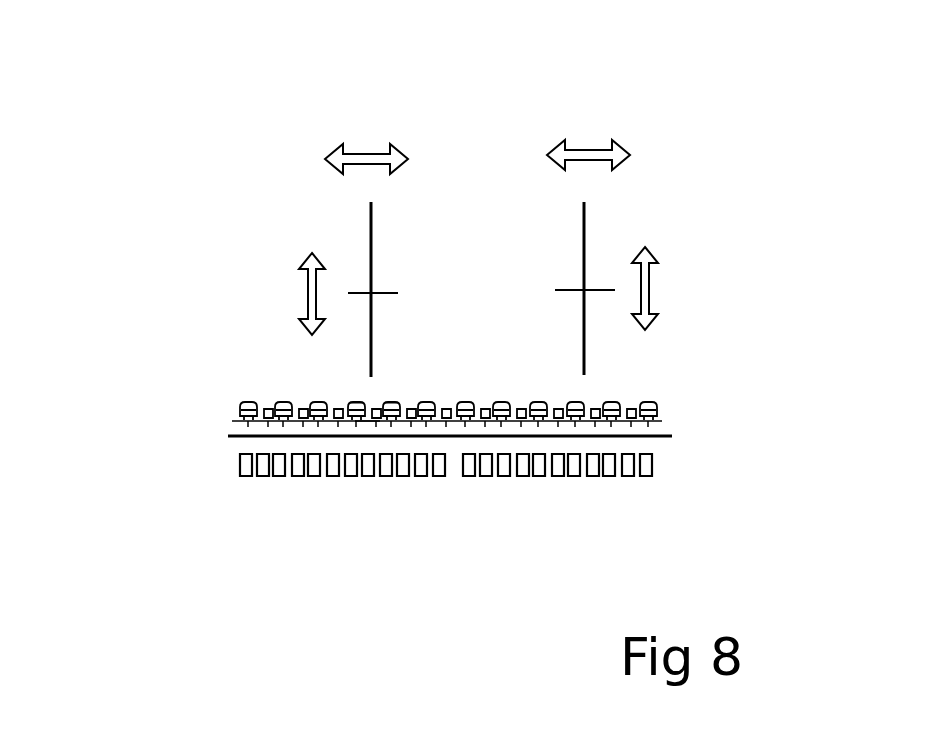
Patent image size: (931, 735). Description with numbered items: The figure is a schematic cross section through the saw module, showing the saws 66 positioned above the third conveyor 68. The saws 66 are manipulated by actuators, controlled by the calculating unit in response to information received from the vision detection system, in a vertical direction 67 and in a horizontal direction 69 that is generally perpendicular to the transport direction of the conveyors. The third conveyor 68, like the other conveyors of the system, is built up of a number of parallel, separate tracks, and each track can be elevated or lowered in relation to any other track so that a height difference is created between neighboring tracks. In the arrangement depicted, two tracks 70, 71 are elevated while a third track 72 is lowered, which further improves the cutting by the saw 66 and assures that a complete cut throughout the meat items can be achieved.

The saw 66 is at (380, 225).
The vertical direction 67 is at (288, 295).
The third conveyor 68 is at (677, 412).
The horizontal direction 69 is at (355, 148).
The track 70 is at (348, 398).
The track 71 is at (385, 398).
The third track 72 is at (367, 425).